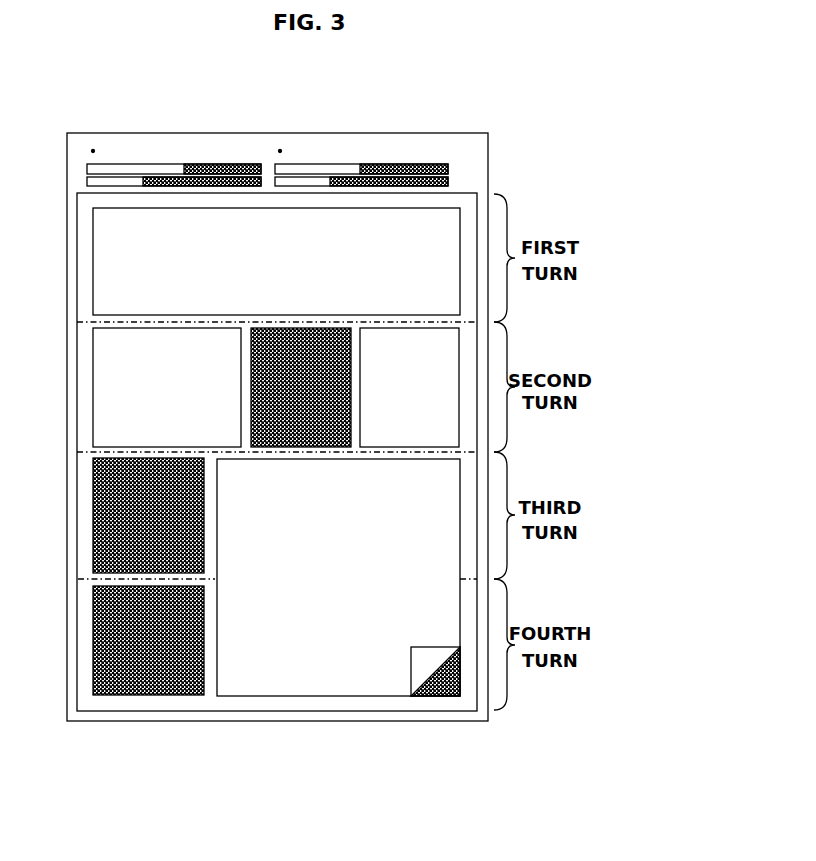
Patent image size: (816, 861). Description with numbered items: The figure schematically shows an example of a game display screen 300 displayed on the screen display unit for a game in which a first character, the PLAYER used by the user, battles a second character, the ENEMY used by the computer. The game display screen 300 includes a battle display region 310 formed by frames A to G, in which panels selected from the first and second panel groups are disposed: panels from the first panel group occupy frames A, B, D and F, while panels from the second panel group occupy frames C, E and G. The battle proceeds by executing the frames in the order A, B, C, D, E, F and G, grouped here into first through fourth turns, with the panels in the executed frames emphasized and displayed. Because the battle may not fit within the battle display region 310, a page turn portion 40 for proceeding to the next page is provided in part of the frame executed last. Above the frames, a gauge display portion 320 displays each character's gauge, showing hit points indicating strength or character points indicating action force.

The game display screen 300 is at (466, 114).
The battle display region 310 is at (77, 267).
The gauge display portion 320 is at (61, 140).
The page turn portion 40 is at (416, 690).